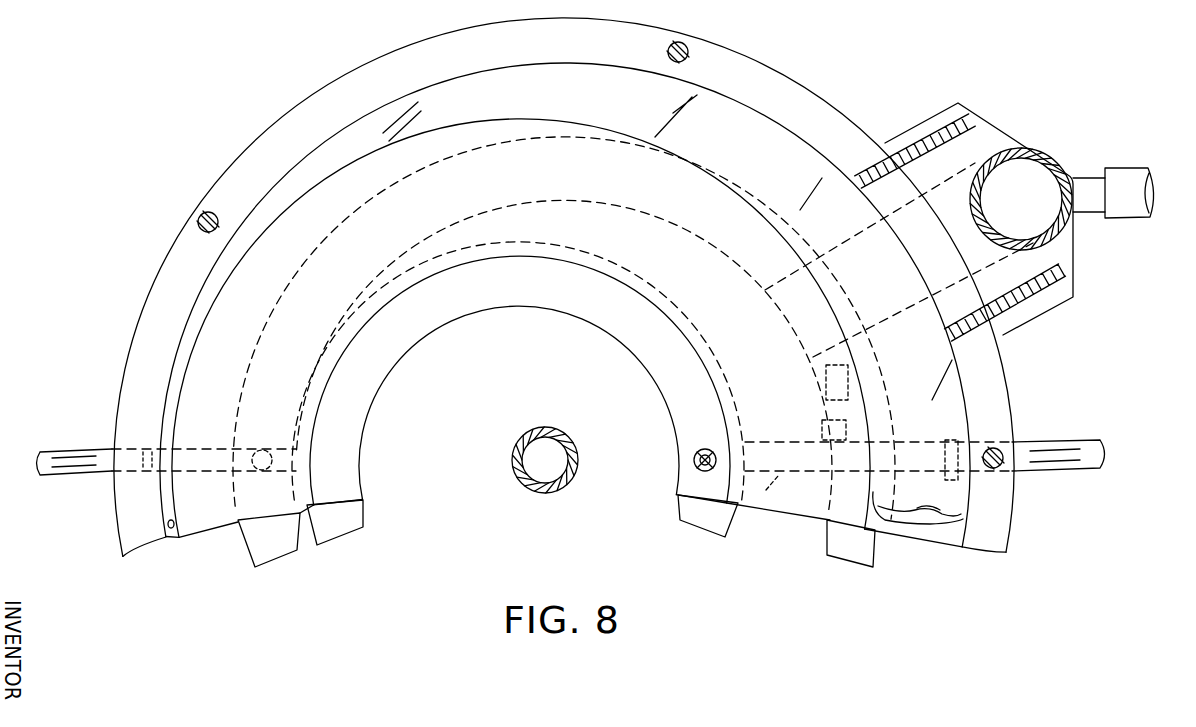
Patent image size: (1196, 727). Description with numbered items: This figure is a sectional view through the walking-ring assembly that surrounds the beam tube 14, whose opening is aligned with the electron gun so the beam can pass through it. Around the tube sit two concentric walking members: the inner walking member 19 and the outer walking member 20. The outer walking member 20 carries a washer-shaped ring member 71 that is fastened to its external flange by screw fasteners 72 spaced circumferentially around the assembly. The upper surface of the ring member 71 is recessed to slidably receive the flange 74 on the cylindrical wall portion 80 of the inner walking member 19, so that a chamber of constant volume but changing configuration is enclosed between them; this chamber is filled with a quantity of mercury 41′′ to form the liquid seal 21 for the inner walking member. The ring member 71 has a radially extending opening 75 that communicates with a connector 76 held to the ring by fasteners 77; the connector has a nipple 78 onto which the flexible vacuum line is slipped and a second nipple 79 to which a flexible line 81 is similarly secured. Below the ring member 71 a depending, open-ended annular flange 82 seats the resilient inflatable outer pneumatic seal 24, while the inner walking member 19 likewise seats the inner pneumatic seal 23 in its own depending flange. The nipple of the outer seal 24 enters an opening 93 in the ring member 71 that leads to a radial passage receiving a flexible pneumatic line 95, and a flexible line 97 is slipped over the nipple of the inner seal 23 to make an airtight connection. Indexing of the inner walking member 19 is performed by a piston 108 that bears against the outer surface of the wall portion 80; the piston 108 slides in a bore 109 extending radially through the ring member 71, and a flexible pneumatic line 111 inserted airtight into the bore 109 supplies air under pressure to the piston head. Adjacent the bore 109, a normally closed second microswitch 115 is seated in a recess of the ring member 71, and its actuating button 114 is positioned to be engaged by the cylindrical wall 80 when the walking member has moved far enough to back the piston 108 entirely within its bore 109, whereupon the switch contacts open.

The beam tube 14 is at (566, 446).
The inner walking member 19 is at (320, 387).
The outer walking member 20 is at (740, 272).
The liquid seal 21 is at (543, 110).
The inner pneumatic seal 23 is at (349, 539).
The outer pneumatic seal 24 is at (284, 564).
The band end portion 41′′ is at (950, 498).
The ring member 71 is at (842, 108).
The screw fasteners 72 is at (218, 217).
The flange 74 is at (198, 358).
The radially extending opening 75 is at (856, 240).
The connector 76 is at (1023, 136).
The fasteners 77 is at (932, 124).
The nipple 78 is at (972, 215).
The second nipple 79 is at (1092, 214).
The cylindrical wall portion 80 is at (693, 310).
The flexible line 81 is at (1144, 168).
The depending annular flange 82 is at (276, 297).
The opening 93 is at (262, 450).
The flexible pneumatic line 95 is at (70, 450).
The flexible line 97 is at (708, 450).
The piston 108 is at (795, 491).
The bore 109 is at (951, 443).
The flexible pneumatic line 111 is at (1036, 442).
The actuating button 114 is at (820, 430).
The second microswitch 115 is at (820, 393).